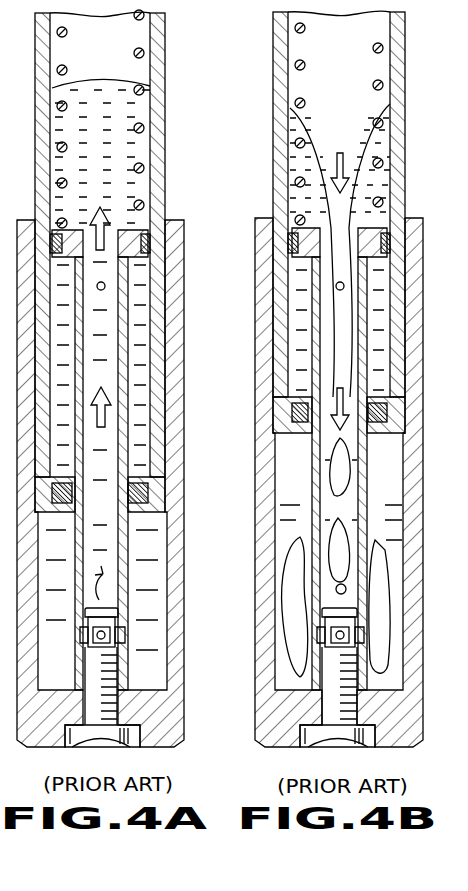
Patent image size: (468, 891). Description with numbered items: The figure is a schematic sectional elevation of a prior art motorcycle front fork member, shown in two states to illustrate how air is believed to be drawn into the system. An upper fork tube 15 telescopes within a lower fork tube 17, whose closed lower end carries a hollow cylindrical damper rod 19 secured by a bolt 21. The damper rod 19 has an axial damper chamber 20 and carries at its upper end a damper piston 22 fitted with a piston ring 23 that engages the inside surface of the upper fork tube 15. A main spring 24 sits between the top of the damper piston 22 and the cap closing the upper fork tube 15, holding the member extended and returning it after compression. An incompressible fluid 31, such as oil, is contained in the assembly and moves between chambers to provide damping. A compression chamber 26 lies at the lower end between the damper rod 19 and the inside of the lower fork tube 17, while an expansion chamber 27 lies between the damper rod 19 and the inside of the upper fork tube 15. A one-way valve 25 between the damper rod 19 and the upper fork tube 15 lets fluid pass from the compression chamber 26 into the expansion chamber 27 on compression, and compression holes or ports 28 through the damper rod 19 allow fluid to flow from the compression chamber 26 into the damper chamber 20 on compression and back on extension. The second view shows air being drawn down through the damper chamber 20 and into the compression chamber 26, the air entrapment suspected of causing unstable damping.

In FIG. 4A, the upper fork tube 15 is at (165, 26).
In FIG. 4B, the upper fork tube 15 is at (273, 39).
In FIG. 4A, the lower fork tube 17 is at (177, 486).
In FIG. 4B, the lower fork tube 17 is at (260, 486).
In FIG. 4A, the damper rod 19 is at (128, 537).
In FIG. 4B, the damper rod 19 is at (304, 527).
In FIG. 4A, the damper chamber 20 is at (107, 352).
In FIG. 4B, the damper chamber 20 is at (327, 355).
In FIG. 4A, the bolt 21 is at (140, 730).
In FIG. 4B, the bolt 21 is at (312, 738).
In FIG. 4A, the damper piston 22 is at (141, 230).
In FIG. 4B, the damper piston 22 is at (312, 227).
In FIG. 4A, the piston ring 23 is at (147, 245).
In FIG. 4B, the piston ring 23 is at (292, 243).
In FIG. 4A, the main spring 24 is at (144, 56).
In FIG. 4B, the main spring 24 is at (300, 66).
In FIG. 4A, the one-way valve 25 is at (133, 479).
In FIG. 4B, the one-way valve 25 is at (293, 412).
In FIG. 4A, the compression chamber 26 is at (157, 588).
In FIG. 4B, the compression chamber 26 is at (280, 600).
In FIG. 4A, the expansion chamber 27 is at (143, 291).
In FIG. 4B, the expansion chamber 27 is at (298, 307).
In FIG. 4A, the compression holes or ports 28 is at (108, 597).
In FIG. 4B, the compression holes or ports 28 is at (335, 592).
In FIG. 4A, the incompressible fluid 31 is at (133, 118).
In FIG. 4B, the incompressible fluid 31 is at (293, 125).